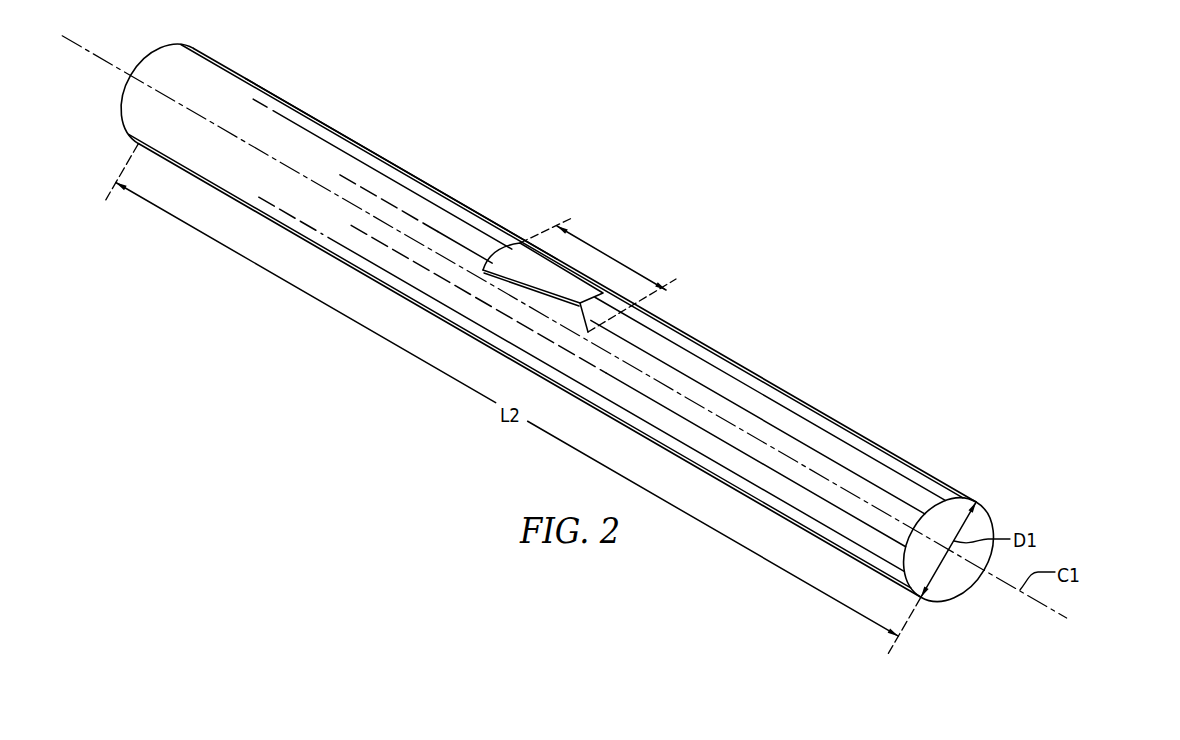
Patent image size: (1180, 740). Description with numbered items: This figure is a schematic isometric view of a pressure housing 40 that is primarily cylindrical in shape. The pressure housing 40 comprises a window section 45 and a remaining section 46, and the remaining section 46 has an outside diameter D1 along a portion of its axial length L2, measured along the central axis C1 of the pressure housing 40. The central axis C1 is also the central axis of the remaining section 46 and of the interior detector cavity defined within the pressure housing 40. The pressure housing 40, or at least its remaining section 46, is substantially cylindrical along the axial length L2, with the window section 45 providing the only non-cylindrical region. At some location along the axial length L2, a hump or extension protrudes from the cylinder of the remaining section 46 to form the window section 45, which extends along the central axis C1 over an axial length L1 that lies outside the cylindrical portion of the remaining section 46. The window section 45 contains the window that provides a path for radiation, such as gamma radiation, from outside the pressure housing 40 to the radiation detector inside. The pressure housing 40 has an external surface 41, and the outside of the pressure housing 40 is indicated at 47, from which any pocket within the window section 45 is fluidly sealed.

The pressure housing 40 is at (548, 361).
The external surface 41 is at (329, 126).
The window section 45 is at (558, 275).
The remaining section 46 is at (330, 224).
The outside of pressure housing 47 is at (847, 381).
The central axis C1 is at (564, 327).
The outside diameter D1 is at (948, 550).
The axial length of window section L1 is at (535, 263).
The axial length of remaining section L2 is at (513, 399).